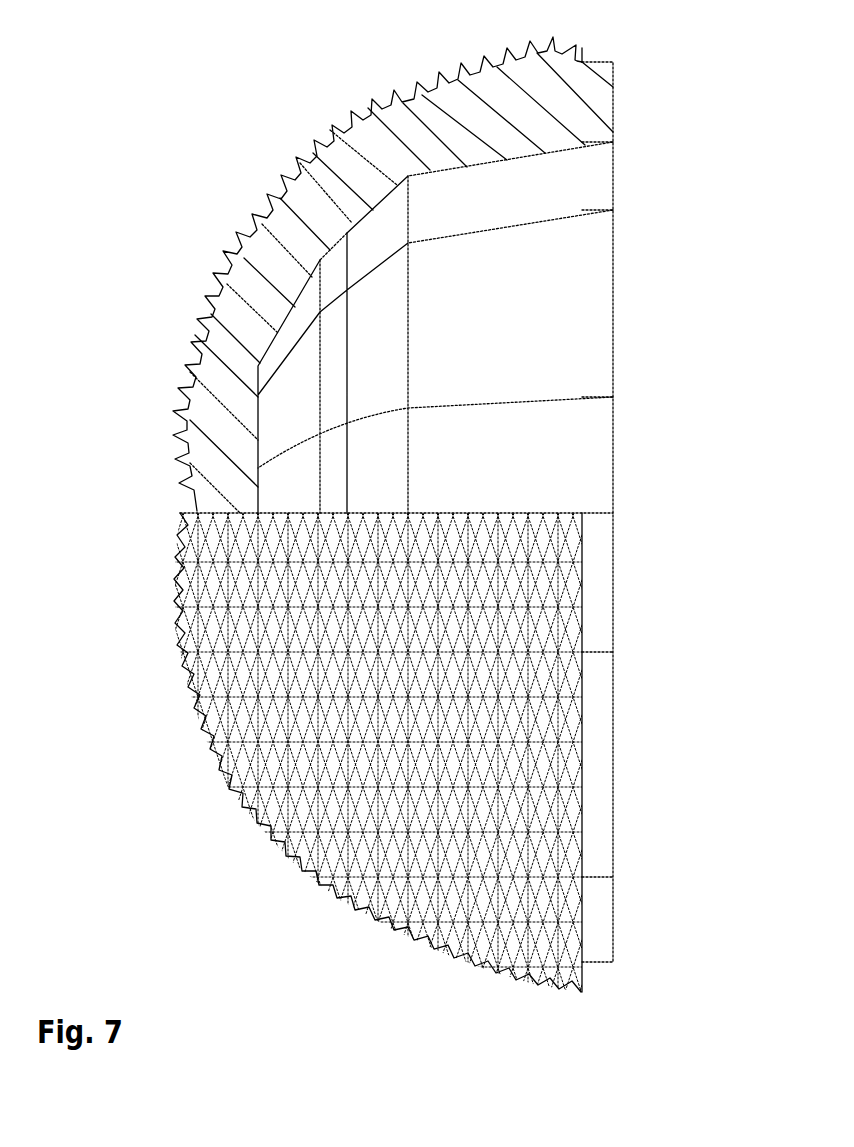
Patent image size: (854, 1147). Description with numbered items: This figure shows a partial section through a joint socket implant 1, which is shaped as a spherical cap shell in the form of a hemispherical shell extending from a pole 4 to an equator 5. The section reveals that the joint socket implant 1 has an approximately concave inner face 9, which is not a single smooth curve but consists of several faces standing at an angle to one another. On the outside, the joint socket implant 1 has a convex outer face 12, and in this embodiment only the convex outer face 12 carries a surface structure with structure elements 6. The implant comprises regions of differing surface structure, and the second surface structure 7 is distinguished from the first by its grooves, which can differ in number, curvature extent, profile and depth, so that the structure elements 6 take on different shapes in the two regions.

The joint socket implant 1 is at (157, 328).
The pole 4 is at (153, 515).
The equator 5 is at (630, 797).
The structure elements 6 is at (406, 90).
The second surface structure 7 is at (166, 693).
The concave inner face 9 is at (503, 313).
The convex outer face 12 is at (246, 196).